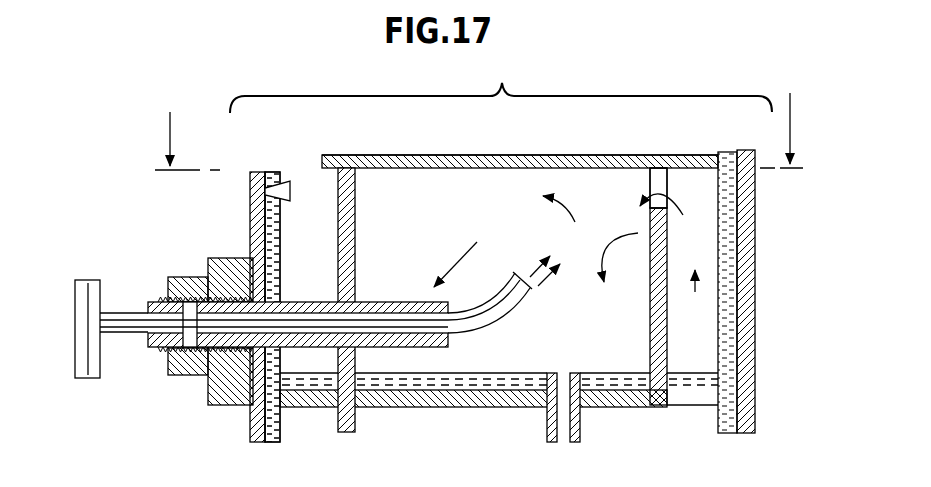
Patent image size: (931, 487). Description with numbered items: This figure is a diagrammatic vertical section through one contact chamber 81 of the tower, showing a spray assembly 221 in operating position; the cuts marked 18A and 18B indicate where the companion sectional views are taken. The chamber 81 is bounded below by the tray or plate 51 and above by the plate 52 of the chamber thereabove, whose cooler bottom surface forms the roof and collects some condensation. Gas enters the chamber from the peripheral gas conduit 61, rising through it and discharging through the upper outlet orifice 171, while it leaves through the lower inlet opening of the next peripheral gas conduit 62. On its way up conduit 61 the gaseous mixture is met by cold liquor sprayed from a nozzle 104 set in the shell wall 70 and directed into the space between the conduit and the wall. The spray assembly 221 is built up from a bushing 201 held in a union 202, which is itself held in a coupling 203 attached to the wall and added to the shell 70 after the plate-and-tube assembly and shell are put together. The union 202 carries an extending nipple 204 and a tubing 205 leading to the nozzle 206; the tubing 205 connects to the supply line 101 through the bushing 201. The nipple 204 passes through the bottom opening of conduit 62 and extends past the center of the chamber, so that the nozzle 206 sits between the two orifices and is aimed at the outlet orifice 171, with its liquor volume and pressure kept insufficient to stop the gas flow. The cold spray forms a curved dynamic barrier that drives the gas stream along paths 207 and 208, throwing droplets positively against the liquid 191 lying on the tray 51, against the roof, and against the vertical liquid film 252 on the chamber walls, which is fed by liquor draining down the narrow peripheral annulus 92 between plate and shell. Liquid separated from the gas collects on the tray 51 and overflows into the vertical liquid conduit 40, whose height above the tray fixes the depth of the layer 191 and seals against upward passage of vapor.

The section plane 18A is at (501, 82).
The section plane 18B is at (460, 116).
The vertical liquid conduit 40 is at (580, 428).
The plate 51 is at (436, 407).
The plate 52 is at (550, 162).
The peripheral gas conduit 61 is at (667, 327).
The peripheral gas conduit 62 is at (357, 210).
The shell 70 is at (250, 428).
The chamber 81 is at (437, 185).
The annulus 92 is at (728, 152).
The line 101 is at (100, 365).
The spray nozzle 104 is at (303, 153).
The outlet orifice 171 is at (657, 180).
The liquid layer 191 is at (523, 360).
The bushing 201 is at (152, 302).
The union 202 is at (197, 250).
The coupling 203 is at (228, 258).
The nipple 204 is at (423, 277).
The tubing 205 is at (404, 325).
The nozzle 206 is at (532, 294).
The gas path 207 is at (534, 223).
The gas path 208 is at (612, 247).
The spray nozzle assembly 221 is at (452, 258).
The liquid film 252 is at (278, 225).